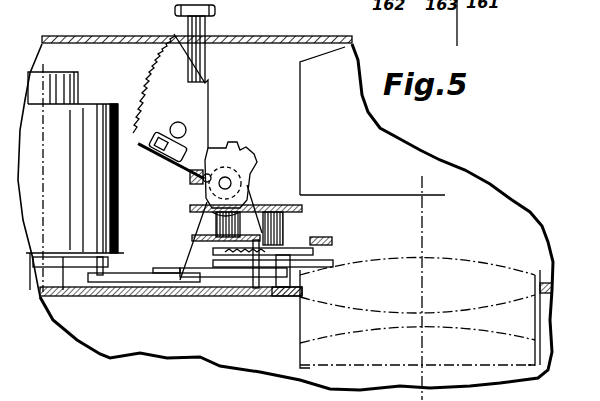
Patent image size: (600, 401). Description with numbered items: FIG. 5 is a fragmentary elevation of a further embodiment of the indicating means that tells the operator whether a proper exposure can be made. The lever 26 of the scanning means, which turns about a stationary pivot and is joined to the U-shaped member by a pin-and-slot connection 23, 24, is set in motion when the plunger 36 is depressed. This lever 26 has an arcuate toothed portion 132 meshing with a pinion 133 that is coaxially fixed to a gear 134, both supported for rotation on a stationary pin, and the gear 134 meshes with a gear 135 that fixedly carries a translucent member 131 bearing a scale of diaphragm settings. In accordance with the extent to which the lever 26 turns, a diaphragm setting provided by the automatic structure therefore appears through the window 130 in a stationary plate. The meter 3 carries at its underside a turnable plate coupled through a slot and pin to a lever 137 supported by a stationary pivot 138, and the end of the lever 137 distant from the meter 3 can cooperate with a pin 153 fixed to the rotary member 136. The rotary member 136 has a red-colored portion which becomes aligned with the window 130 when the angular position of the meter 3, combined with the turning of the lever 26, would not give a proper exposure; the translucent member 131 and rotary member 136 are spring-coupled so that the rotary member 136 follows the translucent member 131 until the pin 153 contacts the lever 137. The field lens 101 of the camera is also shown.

The meter 3 is at (104, 122).
The lever 26 is at (173, 90).
The plunger 36 is at (203, 30).
The pin-and-slot connection 23 is at (164, 173).
The pin-and-slot connection 24 is at (170, 160).
The arcuate toothed portion 132 is at (212, 218).
The pinion 133 is at (225, 234).
The gear 134 is at (208, 241).
The window 130 is at (318, 238).
The translucent member 131 is at (330, 252).
The rotary member 136 is at (342, 260).
The gear 135 is at (286, 232).
The pin 153 is at (235, 287).
The stationary pivot 138 is at (163, 292).
The lever 137 is at (122, 293).
The field lens 101 is at (496, 250).